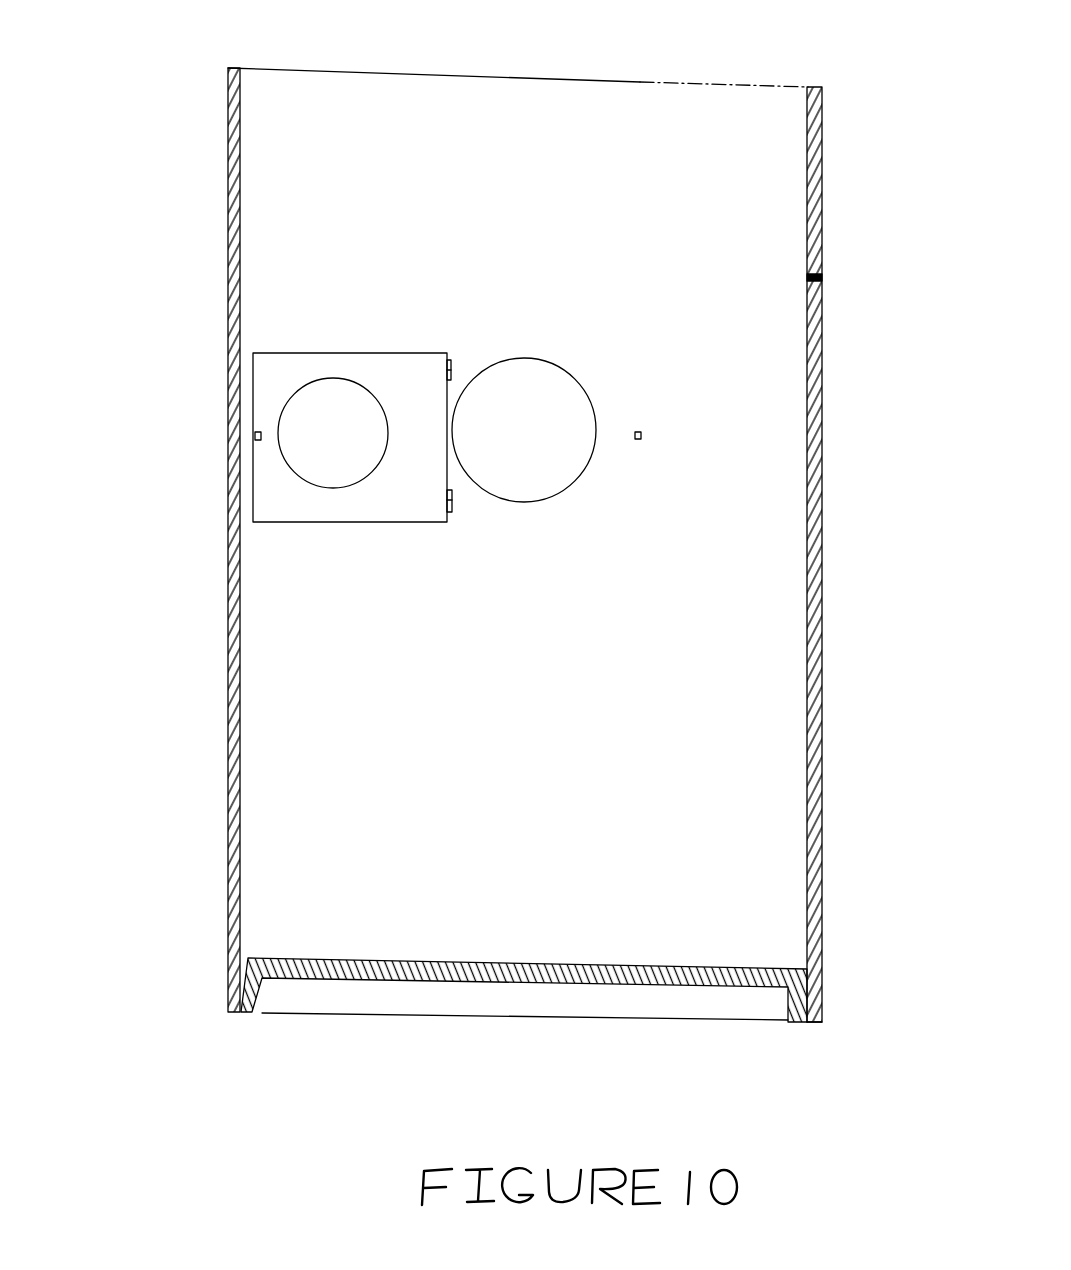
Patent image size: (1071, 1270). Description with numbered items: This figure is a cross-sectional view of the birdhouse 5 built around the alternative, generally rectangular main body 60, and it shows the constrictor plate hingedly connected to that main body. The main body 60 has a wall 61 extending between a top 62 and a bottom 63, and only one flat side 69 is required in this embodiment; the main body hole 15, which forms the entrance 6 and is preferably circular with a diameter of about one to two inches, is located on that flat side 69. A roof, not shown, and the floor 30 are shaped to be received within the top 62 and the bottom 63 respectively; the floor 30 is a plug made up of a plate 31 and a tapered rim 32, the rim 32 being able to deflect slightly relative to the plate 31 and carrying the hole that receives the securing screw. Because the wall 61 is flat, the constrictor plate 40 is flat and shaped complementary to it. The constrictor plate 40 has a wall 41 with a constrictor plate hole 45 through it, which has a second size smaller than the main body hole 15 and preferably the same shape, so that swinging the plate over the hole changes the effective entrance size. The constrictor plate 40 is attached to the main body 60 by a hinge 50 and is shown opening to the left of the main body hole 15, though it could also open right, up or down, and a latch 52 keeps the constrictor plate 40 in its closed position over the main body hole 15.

The birdhouse 5 is at (143, 773).
The entrance 6 is at (596, 410).
The main body hole 15 is at (556, 401).
The floor 30 is at (524, 1035).
The plate 31 is at (500, 984).
The rim 32 is at (390, 1006).
The constrictor plate 40 is at (281, 473).
The wall 41 is at (280, 379).
The constrictor plate hole 45 is at (283, 453).
The hinge 50 is at (452, 358).
The latch 52 is at (641, 439).
The main body 60 is at (504, 537).
The wall 61 is at (312, 150).
The top 62 is at (815, 87).
The bottom 63 is at (821, 1022).
The flat side 69 is at (672, 107).